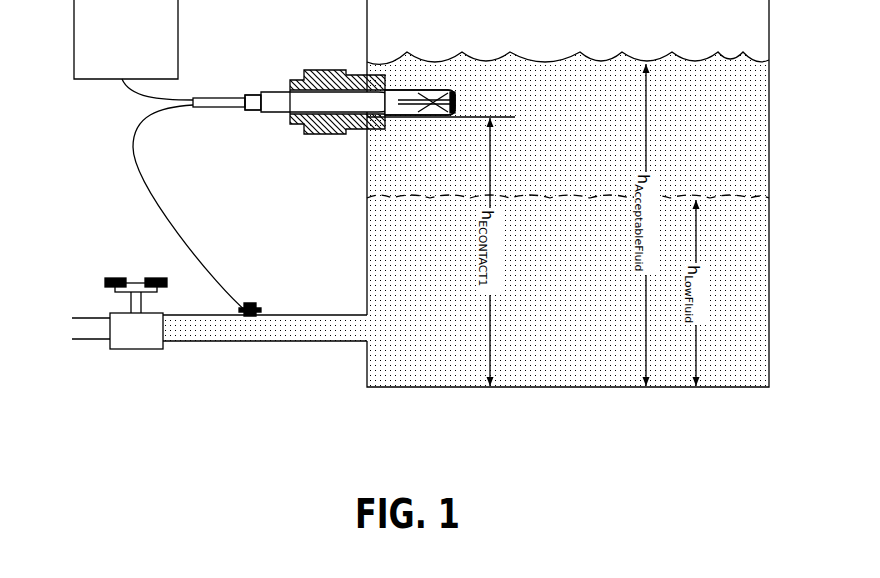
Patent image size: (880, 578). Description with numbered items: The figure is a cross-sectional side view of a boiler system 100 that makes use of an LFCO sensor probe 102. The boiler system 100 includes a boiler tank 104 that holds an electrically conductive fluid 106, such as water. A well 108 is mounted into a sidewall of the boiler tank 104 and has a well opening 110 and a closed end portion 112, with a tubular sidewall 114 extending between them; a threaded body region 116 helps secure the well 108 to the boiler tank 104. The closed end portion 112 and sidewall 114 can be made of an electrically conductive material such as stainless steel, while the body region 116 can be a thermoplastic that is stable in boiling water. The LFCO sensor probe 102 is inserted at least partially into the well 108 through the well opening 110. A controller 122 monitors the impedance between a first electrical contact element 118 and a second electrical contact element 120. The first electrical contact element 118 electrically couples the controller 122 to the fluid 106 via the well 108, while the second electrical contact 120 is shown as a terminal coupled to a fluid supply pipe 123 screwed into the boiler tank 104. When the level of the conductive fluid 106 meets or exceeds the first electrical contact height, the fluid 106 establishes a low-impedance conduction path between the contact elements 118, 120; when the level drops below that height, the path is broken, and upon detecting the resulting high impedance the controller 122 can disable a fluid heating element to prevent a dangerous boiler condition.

The boiler system 100 is at (428, 454).
The LFCO sensor probe 102 is at (237, 73).
The boiler tank 104 is at (769, 185).
The electrically conductive fluid 106 is at (549, 279).
The well 108 is at (413, 117).
The well opening 110 is at (262, 112).
The closed end portion 112 is at (462, 97).
The tubular sidewall 114 is at (416, 92).
The threaded body region 116 is at (376, 70).
The first electrical contact element 118 is at (436, 122).
The second electrical contact element 120 is at (251, 324).
The controller 122 is at (111, 59).
The fluid supply pipe 123 is at (288, 315).